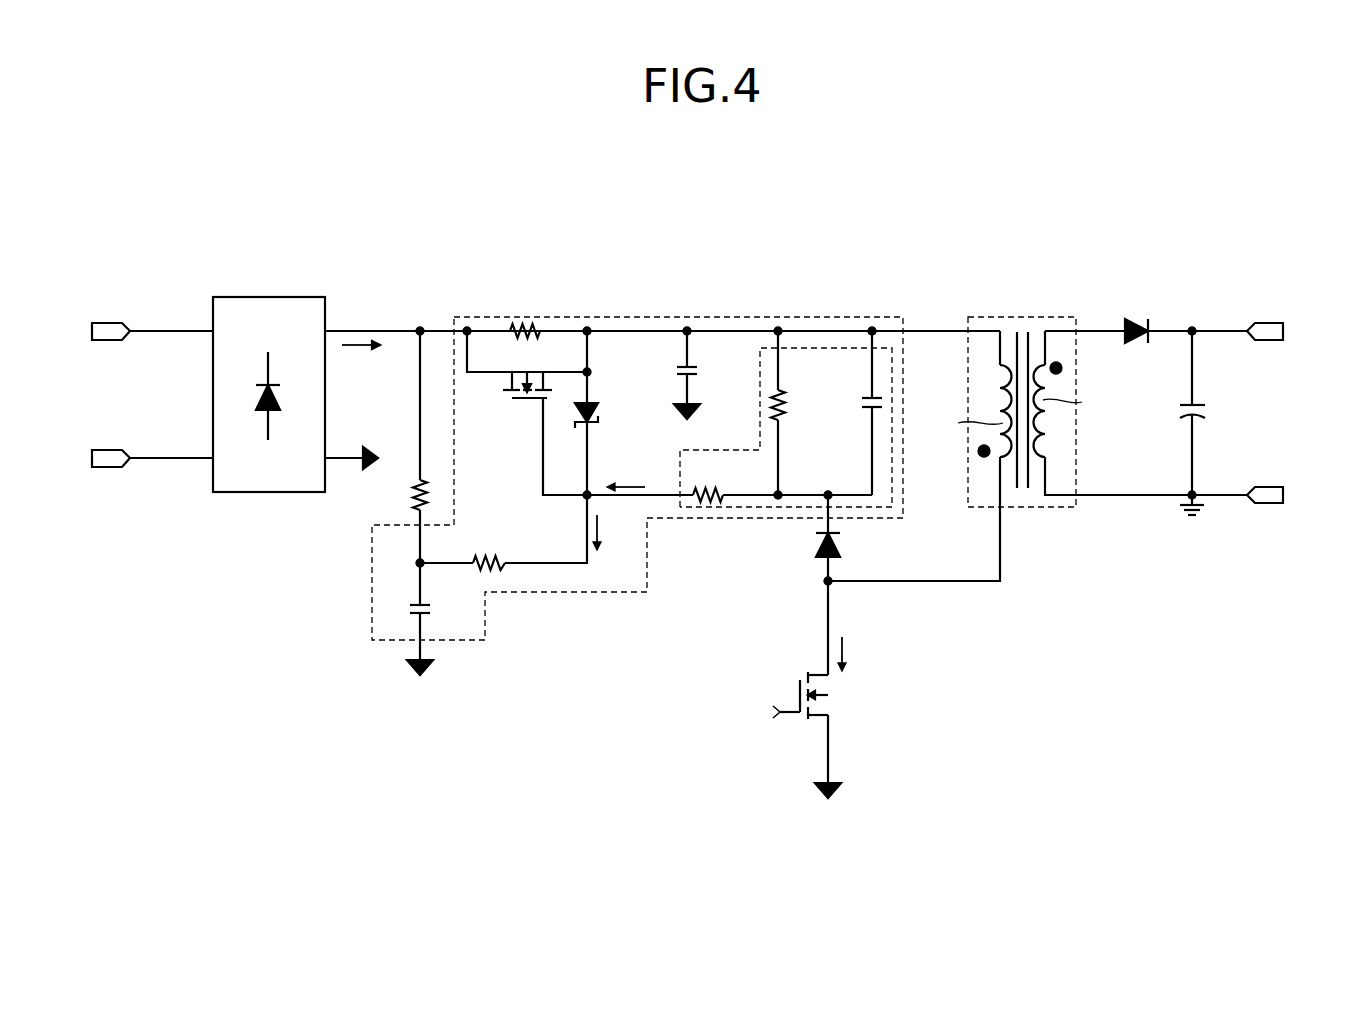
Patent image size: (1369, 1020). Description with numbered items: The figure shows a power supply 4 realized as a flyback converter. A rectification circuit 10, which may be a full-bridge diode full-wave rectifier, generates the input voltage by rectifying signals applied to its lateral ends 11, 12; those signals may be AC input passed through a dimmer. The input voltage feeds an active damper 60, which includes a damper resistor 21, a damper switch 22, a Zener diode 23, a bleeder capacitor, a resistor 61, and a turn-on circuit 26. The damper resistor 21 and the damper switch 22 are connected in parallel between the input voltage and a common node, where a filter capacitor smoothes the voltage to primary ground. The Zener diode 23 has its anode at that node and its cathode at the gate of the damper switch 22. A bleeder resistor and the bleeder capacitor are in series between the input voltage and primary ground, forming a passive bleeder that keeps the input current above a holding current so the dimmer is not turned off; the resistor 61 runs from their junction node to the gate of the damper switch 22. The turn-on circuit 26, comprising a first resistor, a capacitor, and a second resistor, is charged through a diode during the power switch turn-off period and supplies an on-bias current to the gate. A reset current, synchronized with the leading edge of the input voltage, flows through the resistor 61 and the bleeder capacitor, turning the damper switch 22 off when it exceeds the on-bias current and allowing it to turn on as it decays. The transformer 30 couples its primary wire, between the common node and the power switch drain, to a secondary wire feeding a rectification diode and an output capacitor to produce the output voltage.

The power supply 4 is at (927, 240).
The rectification circuit 10 is at (270, 297).
The lateral end 11 is at (104, 322).
The lateral end 12 is at (104, 449).
The damper resistor 21 is at (524, 318).
The damper switch 22 is at (522, 400).
The Zener diode 23 is at (594, 403).
The turn-on circuit 26 is at (822, 348).
The transformer 30 is at (1022, 317).
The active damper 60 is at (582, 317).
The resistor 61 is at (488, 554).